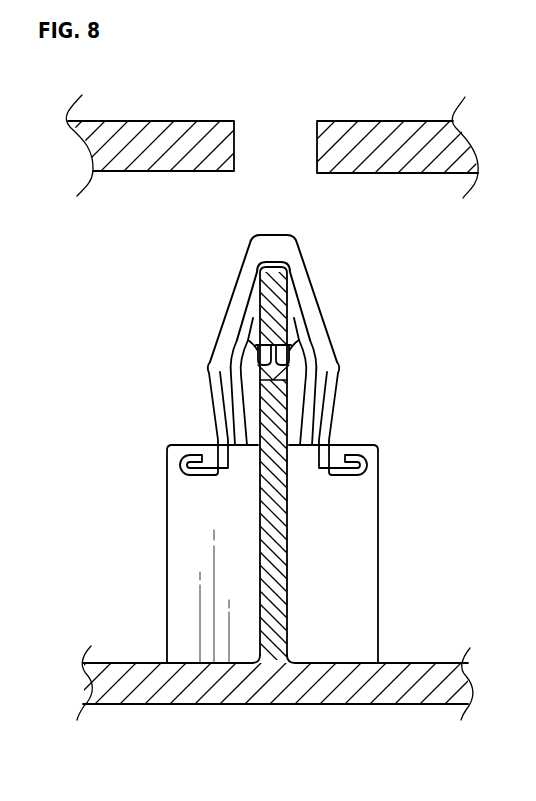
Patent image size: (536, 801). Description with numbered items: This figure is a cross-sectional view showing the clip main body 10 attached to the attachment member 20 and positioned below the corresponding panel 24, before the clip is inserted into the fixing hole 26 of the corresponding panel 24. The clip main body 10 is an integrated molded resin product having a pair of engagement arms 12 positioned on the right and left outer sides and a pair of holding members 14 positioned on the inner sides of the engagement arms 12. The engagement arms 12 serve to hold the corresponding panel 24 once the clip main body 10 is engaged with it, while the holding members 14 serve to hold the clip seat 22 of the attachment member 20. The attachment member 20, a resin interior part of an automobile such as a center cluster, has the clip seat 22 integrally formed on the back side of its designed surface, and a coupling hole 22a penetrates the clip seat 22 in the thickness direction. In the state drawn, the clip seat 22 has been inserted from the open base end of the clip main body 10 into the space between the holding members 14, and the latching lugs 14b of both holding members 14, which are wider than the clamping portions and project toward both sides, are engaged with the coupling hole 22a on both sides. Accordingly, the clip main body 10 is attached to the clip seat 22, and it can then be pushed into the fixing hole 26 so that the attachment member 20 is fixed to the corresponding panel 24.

The clip main body 10 is at (314, 241).
The engagement arms 12 is at (233, 292).
The holding members 14 is at (240, 325).
The latching lugs 14b is at (257, 350).
The attachment member 20 is at (186, 688).
The clip seat 22 is at (285, 516).
The coupling hole 22a is at (271, 378).
The corresponding panel 24 is at (160, 128).
The fixing hole 26 is at (275, 138).